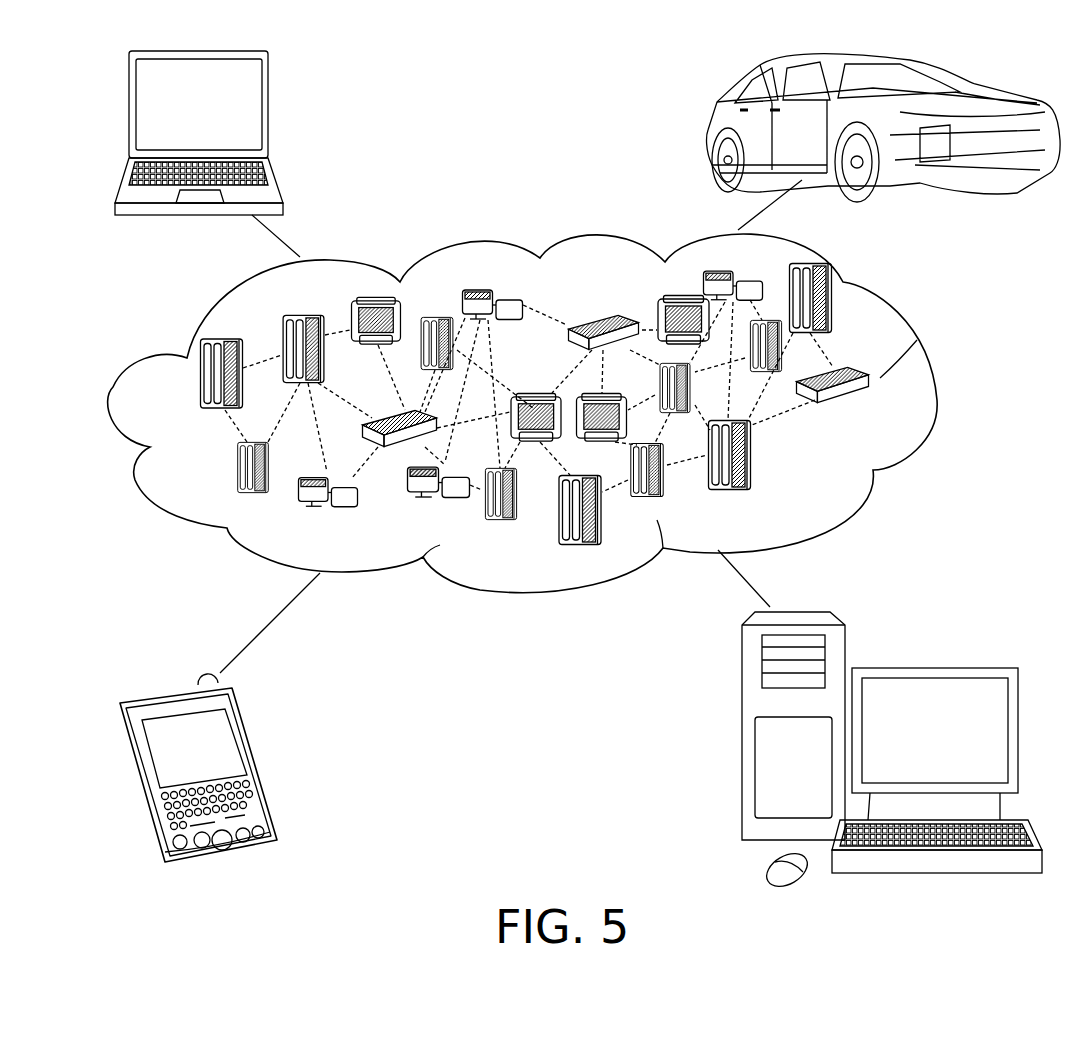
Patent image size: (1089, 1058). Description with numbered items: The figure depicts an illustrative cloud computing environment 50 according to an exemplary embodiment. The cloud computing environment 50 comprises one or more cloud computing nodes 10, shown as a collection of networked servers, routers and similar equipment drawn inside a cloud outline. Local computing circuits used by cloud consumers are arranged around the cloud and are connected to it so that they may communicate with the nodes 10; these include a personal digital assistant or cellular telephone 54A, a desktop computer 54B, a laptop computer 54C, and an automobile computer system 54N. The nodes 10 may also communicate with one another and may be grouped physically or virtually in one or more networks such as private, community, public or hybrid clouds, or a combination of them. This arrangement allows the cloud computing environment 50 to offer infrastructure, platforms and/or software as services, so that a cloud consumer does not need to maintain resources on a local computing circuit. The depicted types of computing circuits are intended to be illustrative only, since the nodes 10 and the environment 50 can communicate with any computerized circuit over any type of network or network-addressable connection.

The cloud computing nodes 10 is at (877, 414).
The cloud computing environment 50 is at (935, 383).
The personal digital assistant (PDA) or cellular telephone 54A is at (258, 760).
The desktop computer 54B is at (930, 668).
The laptop computer 54C is at (270, 112).
The automobile computer system 54N is at (710, 128).